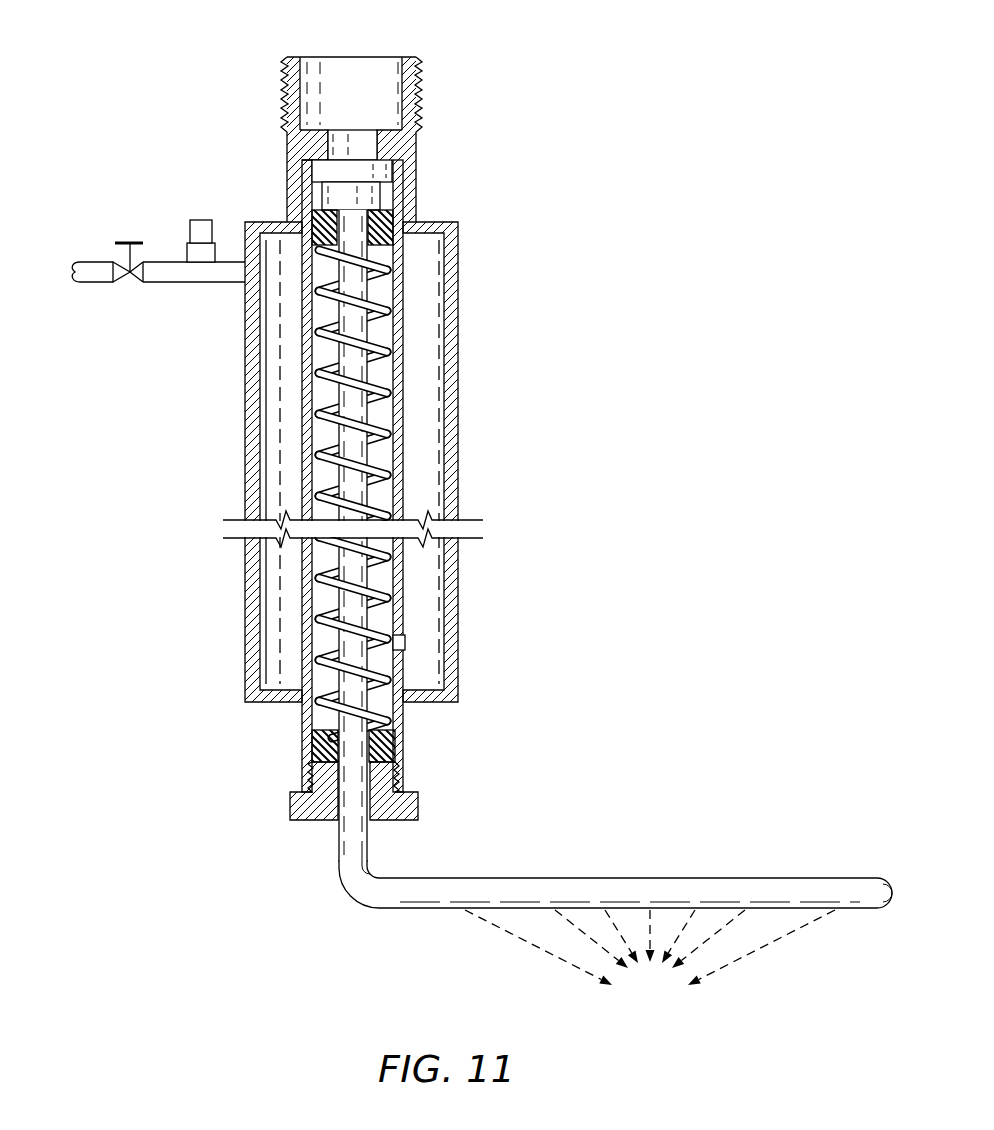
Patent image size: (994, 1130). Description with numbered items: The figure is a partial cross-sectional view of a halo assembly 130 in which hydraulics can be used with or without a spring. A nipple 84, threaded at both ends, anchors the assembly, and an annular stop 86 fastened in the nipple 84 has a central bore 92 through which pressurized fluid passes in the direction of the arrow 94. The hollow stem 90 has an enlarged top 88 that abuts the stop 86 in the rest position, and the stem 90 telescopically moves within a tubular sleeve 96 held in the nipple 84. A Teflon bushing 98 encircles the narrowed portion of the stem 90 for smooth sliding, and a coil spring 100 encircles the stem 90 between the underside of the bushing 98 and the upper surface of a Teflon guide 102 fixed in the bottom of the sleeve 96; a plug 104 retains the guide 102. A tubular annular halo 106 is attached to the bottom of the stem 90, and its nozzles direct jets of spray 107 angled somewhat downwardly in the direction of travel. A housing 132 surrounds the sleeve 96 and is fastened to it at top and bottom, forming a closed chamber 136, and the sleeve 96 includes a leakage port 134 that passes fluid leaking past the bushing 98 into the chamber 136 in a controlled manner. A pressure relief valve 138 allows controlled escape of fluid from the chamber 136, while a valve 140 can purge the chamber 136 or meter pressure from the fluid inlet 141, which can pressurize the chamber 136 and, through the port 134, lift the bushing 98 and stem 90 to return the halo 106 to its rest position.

The nipple 84 is at (421, 101).
The annular stop 86 is at (401, 148).
The top of the stem 88 is at (379, 192).
The stem 90 is at (353, 504).
The central bore 92 is at (365, 135).
The arrow 94 is at (337, 80).
The tubular sleeve 96 is at (305, 173).
The Teflon bushing 98 is at (382, 248).
The coil spring 100 is at (370, 428).
The Teflon guide 102 is at (388, 742).
The plug 104 is at (419, 805).
The halo 106 is at (648, 887).
The jets of spray 107 is at (727, 958).
The halo assembly 130 is at (659, 211).
The housing 132 is at (459, 322).
The leakage port 134 is at (405, 643).
The closed chamber 136 is at (428, 593).
The pressure relief valve 138 is at (198, 220).
The valve 140 is at (125, 283).
The fluid inlet 141 is at (92, 262).